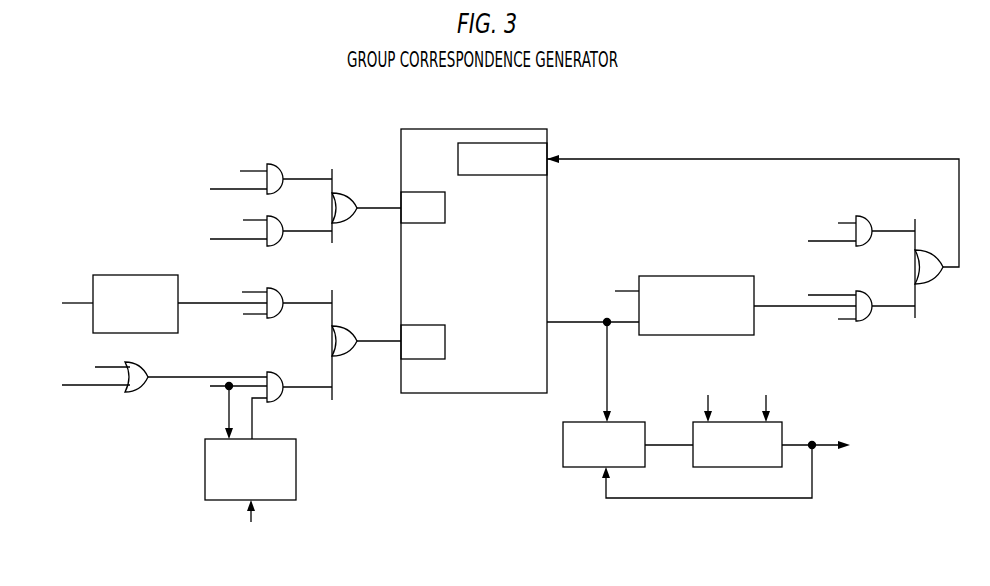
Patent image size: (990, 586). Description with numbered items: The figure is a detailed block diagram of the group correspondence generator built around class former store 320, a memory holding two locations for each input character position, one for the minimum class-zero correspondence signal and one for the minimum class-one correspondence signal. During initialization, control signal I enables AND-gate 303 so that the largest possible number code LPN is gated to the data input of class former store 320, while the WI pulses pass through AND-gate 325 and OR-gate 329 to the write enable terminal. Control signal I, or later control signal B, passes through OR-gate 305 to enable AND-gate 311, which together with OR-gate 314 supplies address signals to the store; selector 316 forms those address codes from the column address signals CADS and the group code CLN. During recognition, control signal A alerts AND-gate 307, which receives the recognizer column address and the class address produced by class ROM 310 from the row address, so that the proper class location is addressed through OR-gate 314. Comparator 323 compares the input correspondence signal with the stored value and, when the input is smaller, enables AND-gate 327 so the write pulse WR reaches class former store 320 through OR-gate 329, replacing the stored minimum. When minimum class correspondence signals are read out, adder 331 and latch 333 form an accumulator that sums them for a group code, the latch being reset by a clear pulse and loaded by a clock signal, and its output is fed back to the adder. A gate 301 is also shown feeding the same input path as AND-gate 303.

The AND gate 301 is at (272, 167).
The AND-gate 303 is at (282, 241).
The OR-gate 305 is at (346, 192).
The AND-gate 307 is at (284, 296).
The class read only memory (ROM) 310 is at (118, 275).
The AND-gate 311 is at (276, 373).
The OR-gate 314 is at (345, 328).
The selector 316 is at (297, 442).
The class former store 320 is at (547, 212).
The comparator 323 is at (671, 276).
The AND-gate 325 is at (866, 217).
The AND-gate 327 is at (864, 293).
The OR-gate 329 is at (935, 278).
The adder 331 is at (563, 447).
The latch 333 is at (720, 467).